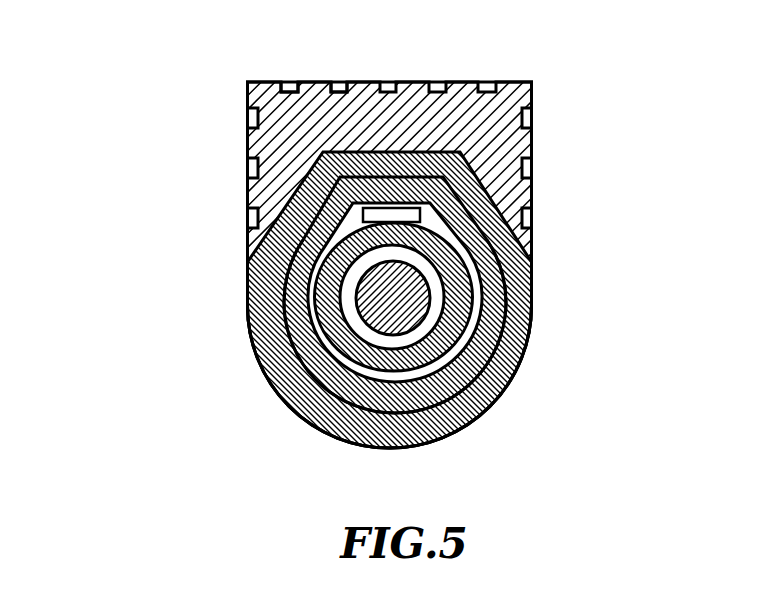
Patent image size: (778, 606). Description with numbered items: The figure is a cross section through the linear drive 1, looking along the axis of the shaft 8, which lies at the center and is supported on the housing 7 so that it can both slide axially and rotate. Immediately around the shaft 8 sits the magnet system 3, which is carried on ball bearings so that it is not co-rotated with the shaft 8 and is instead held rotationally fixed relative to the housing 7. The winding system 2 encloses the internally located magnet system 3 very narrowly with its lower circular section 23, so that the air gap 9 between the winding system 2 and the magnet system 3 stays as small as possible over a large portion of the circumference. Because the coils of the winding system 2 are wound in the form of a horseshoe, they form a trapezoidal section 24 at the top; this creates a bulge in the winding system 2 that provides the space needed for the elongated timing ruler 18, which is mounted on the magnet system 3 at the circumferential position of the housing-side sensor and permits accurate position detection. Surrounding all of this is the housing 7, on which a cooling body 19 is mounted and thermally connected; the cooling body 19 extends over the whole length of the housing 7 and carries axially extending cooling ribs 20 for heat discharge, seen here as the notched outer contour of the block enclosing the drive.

The linear drive 1 is at (214, 152).
The winding system 2 is at (488, 325).
The magnet system 3 is at (457, 295).
The housing 7 is at (278, 373).
The shaft 8 is at (373, 292).
The air gap 9 is at (505, 362).
The timing ruler 18 is at (402, 210).
The cooling body 19 is at (520, 93).
The cooling ribs 20 is at (289, 88).
The lower circular section 23 is at (443, 406).
The trapezoidal section 24 is at (470, 213).